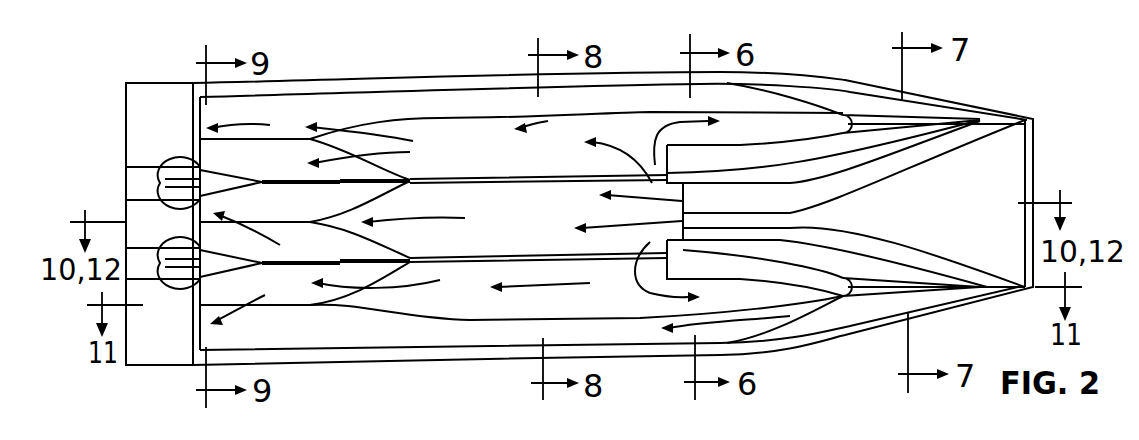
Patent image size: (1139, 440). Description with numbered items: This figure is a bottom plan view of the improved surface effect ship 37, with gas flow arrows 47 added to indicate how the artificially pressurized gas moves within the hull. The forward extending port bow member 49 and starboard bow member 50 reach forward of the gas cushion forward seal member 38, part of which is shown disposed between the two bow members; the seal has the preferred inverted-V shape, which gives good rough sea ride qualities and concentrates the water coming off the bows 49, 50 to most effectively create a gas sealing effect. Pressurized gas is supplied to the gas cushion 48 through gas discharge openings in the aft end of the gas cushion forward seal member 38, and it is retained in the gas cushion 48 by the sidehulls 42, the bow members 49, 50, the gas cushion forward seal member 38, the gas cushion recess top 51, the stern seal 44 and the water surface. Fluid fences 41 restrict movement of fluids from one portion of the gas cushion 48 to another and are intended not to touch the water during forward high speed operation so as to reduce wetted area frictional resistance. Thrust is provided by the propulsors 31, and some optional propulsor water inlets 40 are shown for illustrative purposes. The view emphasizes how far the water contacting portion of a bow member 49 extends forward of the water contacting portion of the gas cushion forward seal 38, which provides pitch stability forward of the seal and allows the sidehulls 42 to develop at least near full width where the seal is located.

The propulsor 31 is at (159, 196).
The surface effect ship 37 is at (998, 201).
The gas cushion forward seal member 38 is at (842, 197).
The propulsor water inlet 40 is at (205, 171).
The fluid fence 41 is at (520, 176).
The sidehull 42 is at (425, 80).
The stern seal 44 is at (319, 214).
The gas flow arrow 47 is at (632, 102).
The gas cushion 48 is at (534, 214).
The port bow member 49 is at (891, 286).
The starboard bow member 50 is at (886, 116).
The gas cushion recess top 51 is at (481, 162).